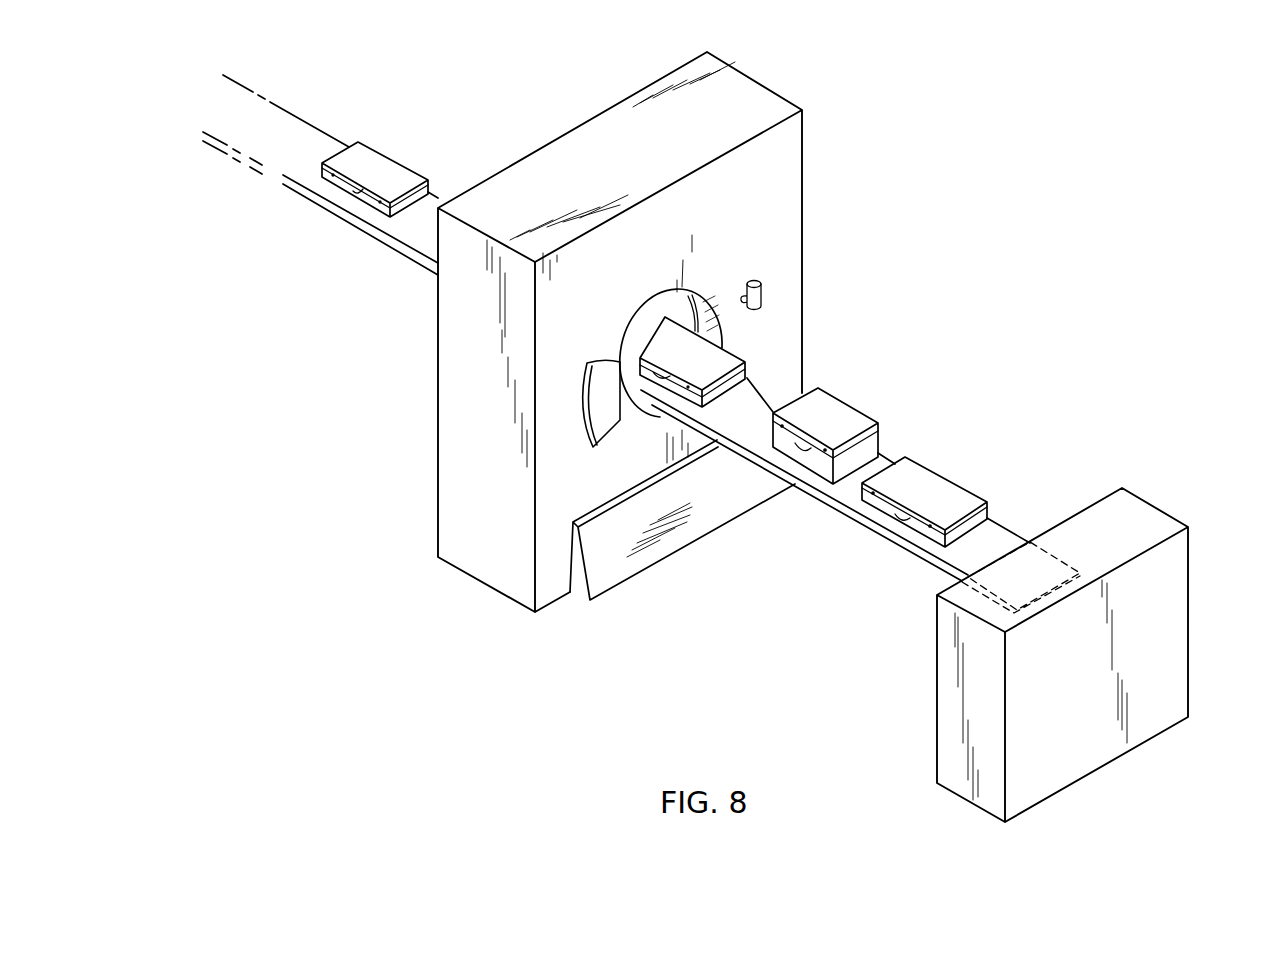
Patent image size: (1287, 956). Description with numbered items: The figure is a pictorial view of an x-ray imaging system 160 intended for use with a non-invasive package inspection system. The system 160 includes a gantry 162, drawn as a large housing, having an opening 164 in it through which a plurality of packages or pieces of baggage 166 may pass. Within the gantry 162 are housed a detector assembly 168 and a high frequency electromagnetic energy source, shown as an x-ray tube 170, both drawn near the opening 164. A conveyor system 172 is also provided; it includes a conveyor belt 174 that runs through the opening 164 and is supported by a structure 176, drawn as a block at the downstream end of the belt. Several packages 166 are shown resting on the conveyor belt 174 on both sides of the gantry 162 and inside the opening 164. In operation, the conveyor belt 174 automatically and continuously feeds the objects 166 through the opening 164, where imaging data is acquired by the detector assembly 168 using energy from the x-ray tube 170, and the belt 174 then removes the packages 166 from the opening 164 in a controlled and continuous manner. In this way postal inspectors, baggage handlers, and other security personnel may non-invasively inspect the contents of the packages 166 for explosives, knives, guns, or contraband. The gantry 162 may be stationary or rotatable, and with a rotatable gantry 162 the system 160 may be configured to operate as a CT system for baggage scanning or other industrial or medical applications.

The x-ray imaging system 160 is at (947, 347).
The gantry 162 is at (745, 244).
The opening 164 is at (707, 298).
The packages or pieces of baggage 166 is at (387, 165).
The detector assembly 168 is at (605, 348).
The x-ray tube 170 is at (762, 298).
The conveyor system 172 is at (218, 176).
The conveyor belt 174 is at (412, 232).
The structure 176 is at (1177, 613).